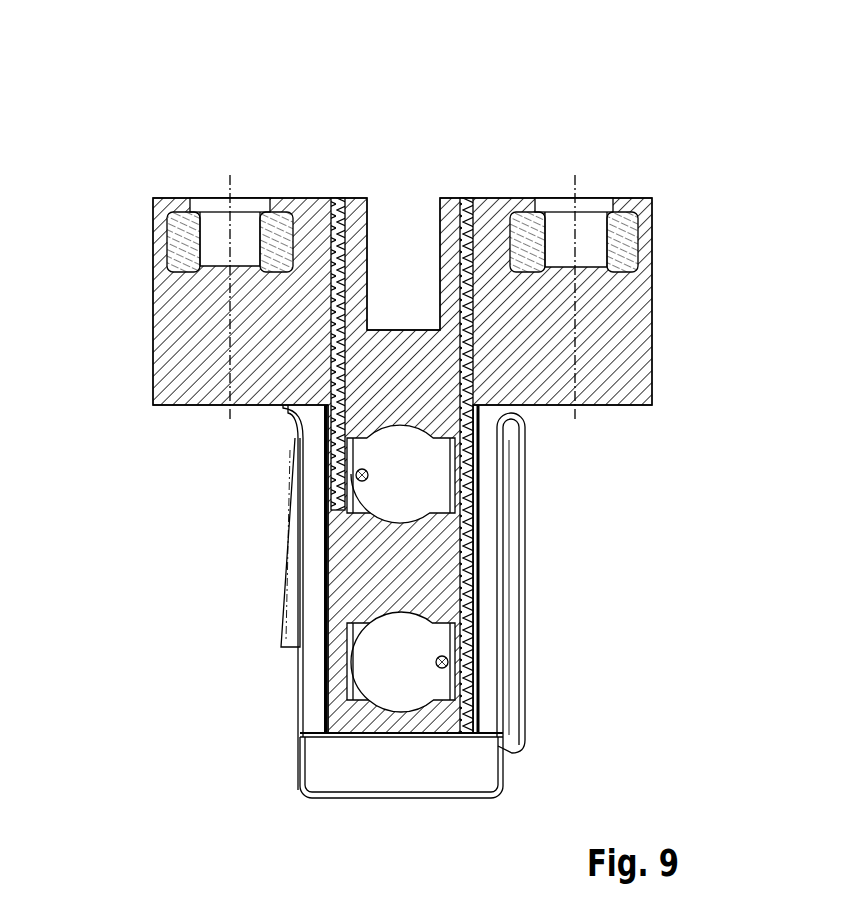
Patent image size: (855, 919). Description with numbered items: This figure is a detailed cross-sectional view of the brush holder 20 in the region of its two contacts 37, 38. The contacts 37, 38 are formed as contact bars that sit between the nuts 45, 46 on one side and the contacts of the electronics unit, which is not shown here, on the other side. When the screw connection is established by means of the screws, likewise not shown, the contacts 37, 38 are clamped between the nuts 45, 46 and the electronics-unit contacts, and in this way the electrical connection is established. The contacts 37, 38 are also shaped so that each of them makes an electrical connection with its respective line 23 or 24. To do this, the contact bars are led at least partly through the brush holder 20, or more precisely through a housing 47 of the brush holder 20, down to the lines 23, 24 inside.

The brush holder 20 is at (403, 400).
The contact 37 is at (173, 198).
The contact 38 is at (624, 212).
The nut 45 is at (185, 244).
The nut 46 is at (620, 247).
The line 23 is at (356, 474).
The line 24 is at (448, 662).
The housing 47 is at (360, 565).